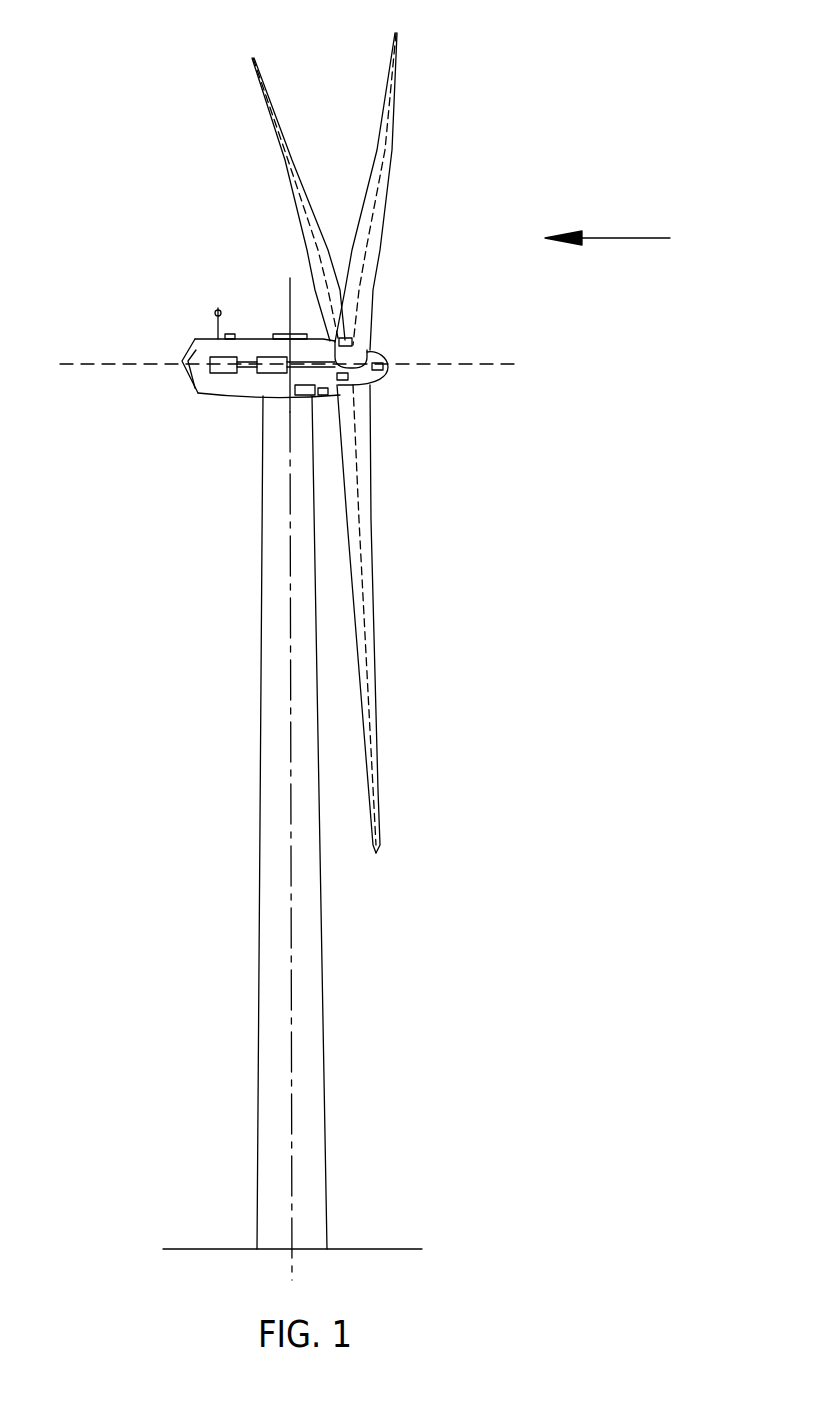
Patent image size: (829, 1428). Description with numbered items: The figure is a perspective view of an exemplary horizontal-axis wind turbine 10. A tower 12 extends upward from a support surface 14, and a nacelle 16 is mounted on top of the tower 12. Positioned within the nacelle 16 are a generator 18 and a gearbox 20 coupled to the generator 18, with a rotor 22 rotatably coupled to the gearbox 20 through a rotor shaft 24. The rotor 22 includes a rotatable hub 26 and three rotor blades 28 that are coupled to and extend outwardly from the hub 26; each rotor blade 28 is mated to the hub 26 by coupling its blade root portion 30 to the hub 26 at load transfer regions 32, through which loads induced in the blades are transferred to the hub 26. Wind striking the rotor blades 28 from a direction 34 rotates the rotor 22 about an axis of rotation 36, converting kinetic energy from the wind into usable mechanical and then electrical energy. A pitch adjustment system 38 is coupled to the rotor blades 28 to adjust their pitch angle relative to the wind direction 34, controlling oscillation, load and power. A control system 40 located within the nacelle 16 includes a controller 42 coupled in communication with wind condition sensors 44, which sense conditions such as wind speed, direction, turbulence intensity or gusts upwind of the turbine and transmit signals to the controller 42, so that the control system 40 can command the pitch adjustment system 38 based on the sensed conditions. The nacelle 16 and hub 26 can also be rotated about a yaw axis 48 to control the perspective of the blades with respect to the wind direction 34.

The wind turbine 10 is at (167, 130).
The tower 12 is at (262, 1025).
The support surface 14 is at (220, 1249).
The nacelle 16 is at (255, 339).
The generator 18 is at (222, 373).
The gearbox 20 is at (262, 373).
The rotor 22 is at (405, 290).
The rotor shaft 24 is at (307, 335).
The rotatable hub 26 is at (375, 357).
The rotor blade 28 is at (283, 164).
The blade root portion 30 is at (372, 459).
The load transfer region 32 is at (363, 392).
The direction 34 is at (638, 238).
The axis of rotation 36 is at (522, 365).
The pitch adjustment system 38 is at (362, 370).
The control system 40 is at (402, 475).
The controller 42 is at (298, 397).
The wind condition sensor 44 is at (320, 397).
The yaw axis 48 is at (298, 951).